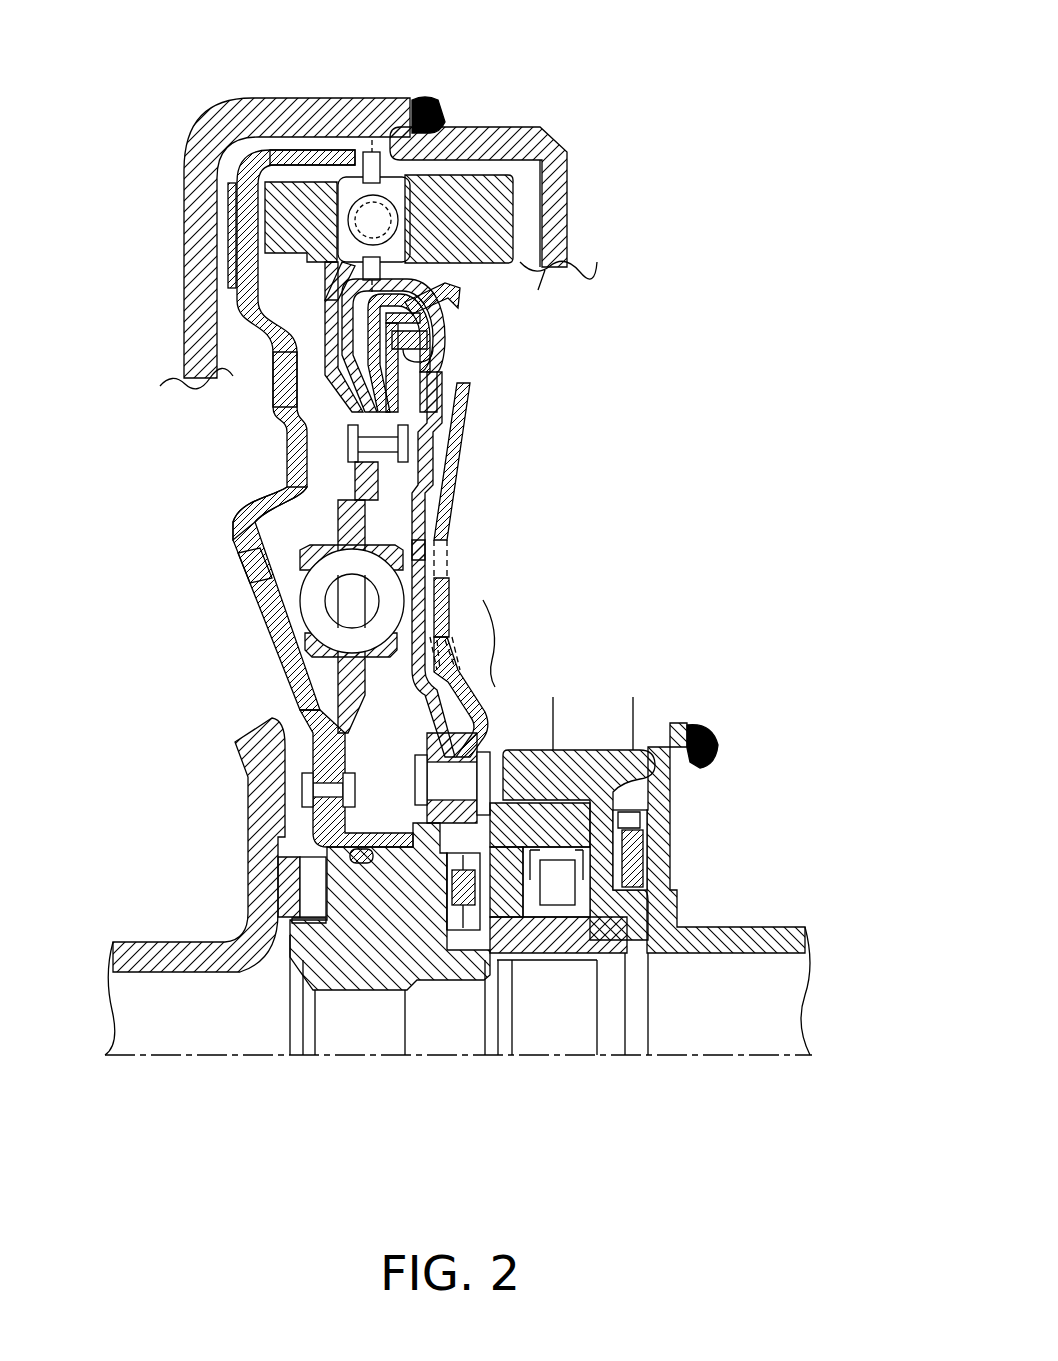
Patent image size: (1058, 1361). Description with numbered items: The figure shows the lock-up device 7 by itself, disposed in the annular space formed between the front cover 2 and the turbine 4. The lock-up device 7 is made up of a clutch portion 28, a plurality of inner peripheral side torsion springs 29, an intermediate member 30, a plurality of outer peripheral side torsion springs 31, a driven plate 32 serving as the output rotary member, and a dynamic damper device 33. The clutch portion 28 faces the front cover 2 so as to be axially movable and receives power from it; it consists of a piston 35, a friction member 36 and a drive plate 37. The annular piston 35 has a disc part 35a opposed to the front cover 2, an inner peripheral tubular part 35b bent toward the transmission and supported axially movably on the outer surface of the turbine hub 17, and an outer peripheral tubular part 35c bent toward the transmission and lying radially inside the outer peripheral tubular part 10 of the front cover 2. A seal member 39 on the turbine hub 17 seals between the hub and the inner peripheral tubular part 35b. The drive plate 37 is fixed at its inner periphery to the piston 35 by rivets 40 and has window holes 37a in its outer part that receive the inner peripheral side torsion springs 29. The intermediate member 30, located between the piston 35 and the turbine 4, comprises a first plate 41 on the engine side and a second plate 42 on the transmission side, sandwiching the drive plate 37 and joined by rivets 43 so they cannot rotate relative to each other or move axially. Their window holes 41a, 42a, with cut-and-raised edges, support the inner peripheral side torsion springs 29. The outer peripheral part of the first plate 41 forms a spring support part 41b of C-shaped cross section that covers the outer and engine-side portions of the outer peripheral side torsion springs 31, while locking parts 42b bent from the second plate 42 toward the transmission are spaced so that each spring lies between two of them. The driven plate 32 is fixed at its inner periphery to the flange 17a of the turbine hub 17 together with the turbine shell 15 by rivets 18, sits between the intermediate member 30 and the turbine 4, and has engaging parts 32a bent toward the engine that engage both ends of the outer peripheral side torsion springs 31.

The front cover 2 is at (197, 252).
The turbine 4 is at (517, 431).
The lock-up device 7 is at (221, 349).
The outer peripheral tubular part 10 is at (374, 101).
The turbine shell 15 is at (493, 712).
The turbine hub 17 is at (386, 1006).
The flange 17a is at (560, 752).
The rivets 18 is at (520, 792).
The clutch portion 28 is at (238, 136).
The inner peripheral side torsion springs 29 is at (325, 601).
The intermediate member 30 is at (321, 479).
The outer peripheral side torsion springs 31 is at (443, 331).
The driven plate 32 is at (448, 524).
The engaging parts 32a is at (418, 358).
The dynamic damper device 33 is at (531, 180).
The piston 35 is at (229, 590).
The disc part 35a is at (250, 529).
The inner peripheral tubular part 35b is at (395, 866).
The outer peripheral tubular part 35c is at (293, 152).
The friction member 36 is at (232, 199).
The drive plate 37 is at (400, 717).
The window holes 37a is at (420, 612).
The seal member 39 is at (368, 858).
The rivets 40 is at (302, 784).
The first plate 41 is at (302, 690).
The window holes 41a is at (262, 566).
The spring support part 41b is at (432, 295).
The second plate 42 is at (400, 487).
The window holes 42a is at (427, 551).
The locking parts 42b is at (458, 272).
The rivets 43 is at (348, 440).